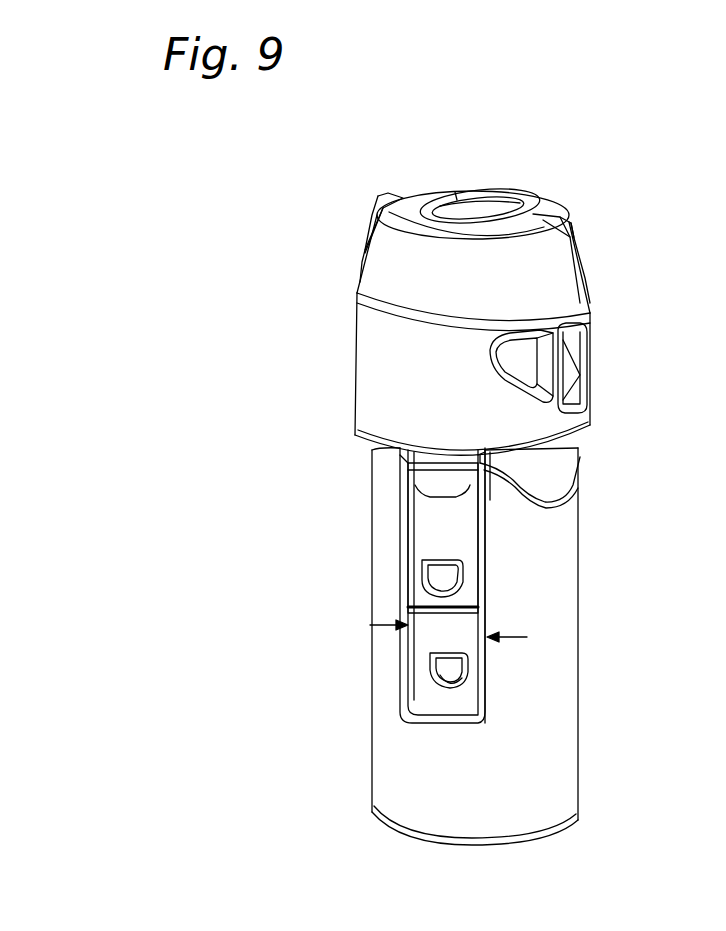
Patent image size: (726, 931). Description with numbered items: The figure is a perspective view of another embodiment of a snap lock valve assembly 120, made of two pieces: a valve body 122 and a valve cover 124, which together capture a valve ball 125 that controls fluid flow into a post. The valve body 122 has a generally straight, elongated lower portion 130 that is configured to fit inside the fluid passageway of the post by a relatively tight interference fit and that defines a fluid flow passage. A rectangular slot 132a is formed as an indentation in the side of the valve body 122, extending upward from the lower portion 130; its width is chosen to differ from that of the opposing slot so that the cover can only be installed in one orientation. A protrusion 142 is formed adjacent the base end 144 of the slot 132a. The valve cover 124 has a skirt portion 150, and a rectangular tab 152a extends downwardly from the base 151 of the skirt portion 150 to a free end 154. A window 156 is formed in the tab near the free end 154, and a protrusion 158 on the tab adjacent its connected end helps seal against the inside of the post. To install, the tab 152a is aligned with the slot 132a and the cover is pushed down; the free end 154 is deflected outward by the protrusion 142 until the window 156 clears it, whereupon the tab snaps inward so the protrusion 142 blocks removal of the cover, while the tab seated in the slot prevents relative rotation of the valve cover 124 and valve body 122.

The valve assembly 120 is at (590, 162).
The valve cover 124 is at (336, 276).
The skirt portion 150 is at (375, 383).
The base 151 is at (583, 453).
The valve ball 125 is at (575, 493).
The valve body 122 is at (590, 652).
The lower portion 130 is at (556, 702).
The slot 132a is at (428, 642).
The tab 152a is at (435, 530).
The window 156 is at (440, 573).
The protrusion 158 is at (410, 493).
The protrusion 142 is at (425, 675).
The base end 144 is at (448, 700).
The free end 154 is at (480, 575).